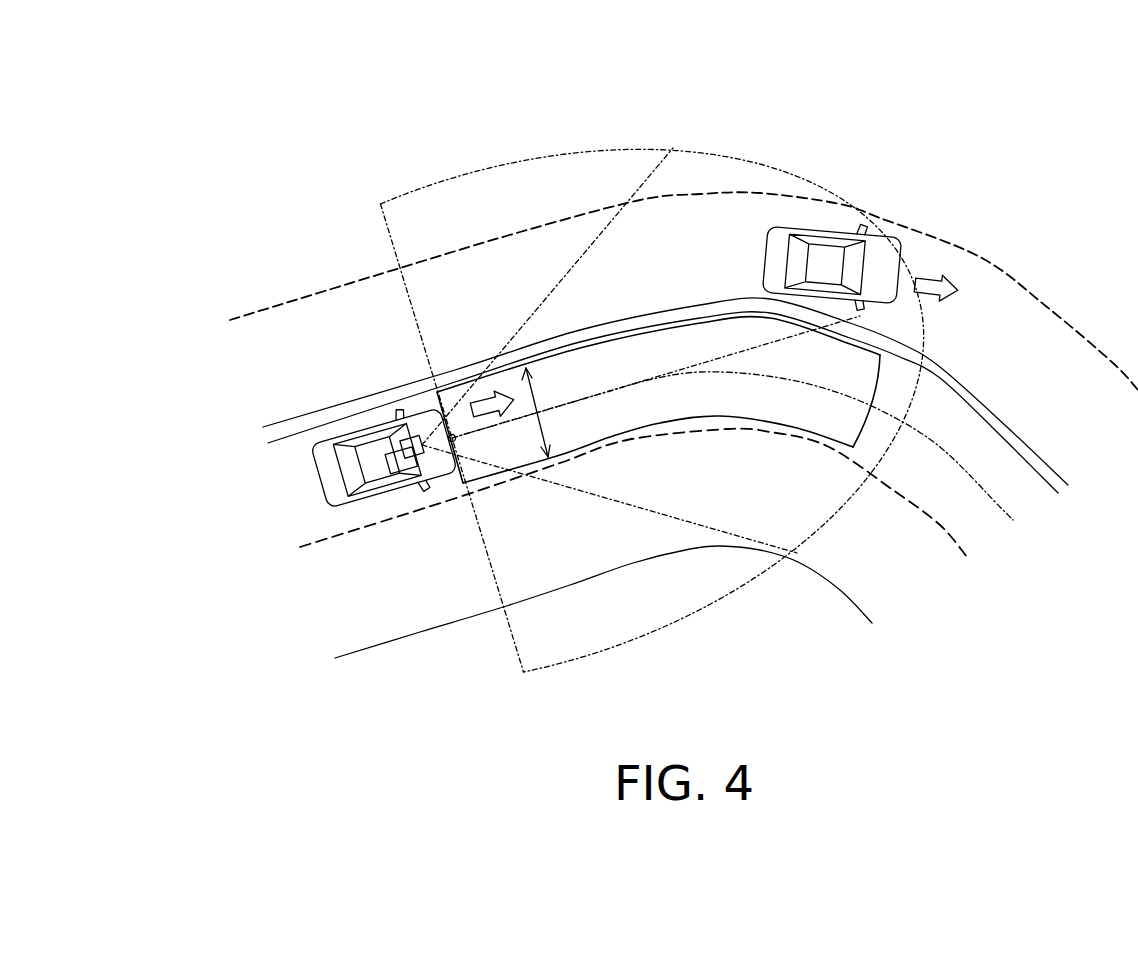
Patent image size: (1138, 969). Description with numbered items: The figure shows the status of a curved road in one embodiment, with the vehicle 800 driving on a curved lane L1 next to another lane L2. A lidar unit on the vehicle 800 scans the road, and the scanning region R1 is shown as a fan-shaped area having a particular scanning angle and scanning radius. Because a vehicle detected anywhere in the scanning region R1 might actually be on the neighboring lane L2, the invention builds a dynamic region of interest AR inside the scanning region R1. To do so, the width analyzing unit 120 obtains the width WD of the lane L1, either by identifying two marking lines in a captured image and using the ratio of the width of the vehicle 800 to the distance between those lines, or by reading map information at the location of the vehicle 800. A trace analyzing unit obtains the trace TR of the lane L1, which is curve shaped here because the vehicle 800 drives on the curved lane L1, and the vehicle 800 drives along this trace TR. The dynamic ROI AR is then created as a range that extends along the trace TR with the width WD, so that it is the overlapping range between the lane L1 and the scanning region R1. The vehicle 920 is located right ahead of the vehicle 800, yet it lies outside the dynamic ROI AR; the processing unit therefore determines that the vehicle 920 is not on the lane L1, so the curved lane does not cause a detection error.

The vehicle 800 is at (337, 445).
The width analyzing unit 120 is at (398, 440).
The vehicle 920 is at (890, 252).
The scanning region R1 is at (422, 187).
The dynamic region of interest (dynamic ROI) AR is at (549, 357).
The trace TR is at (762, 376).
The width WD is at (558, 412).
The lane L1 is at (279, 502).
The lane L2 is at (244, 390).